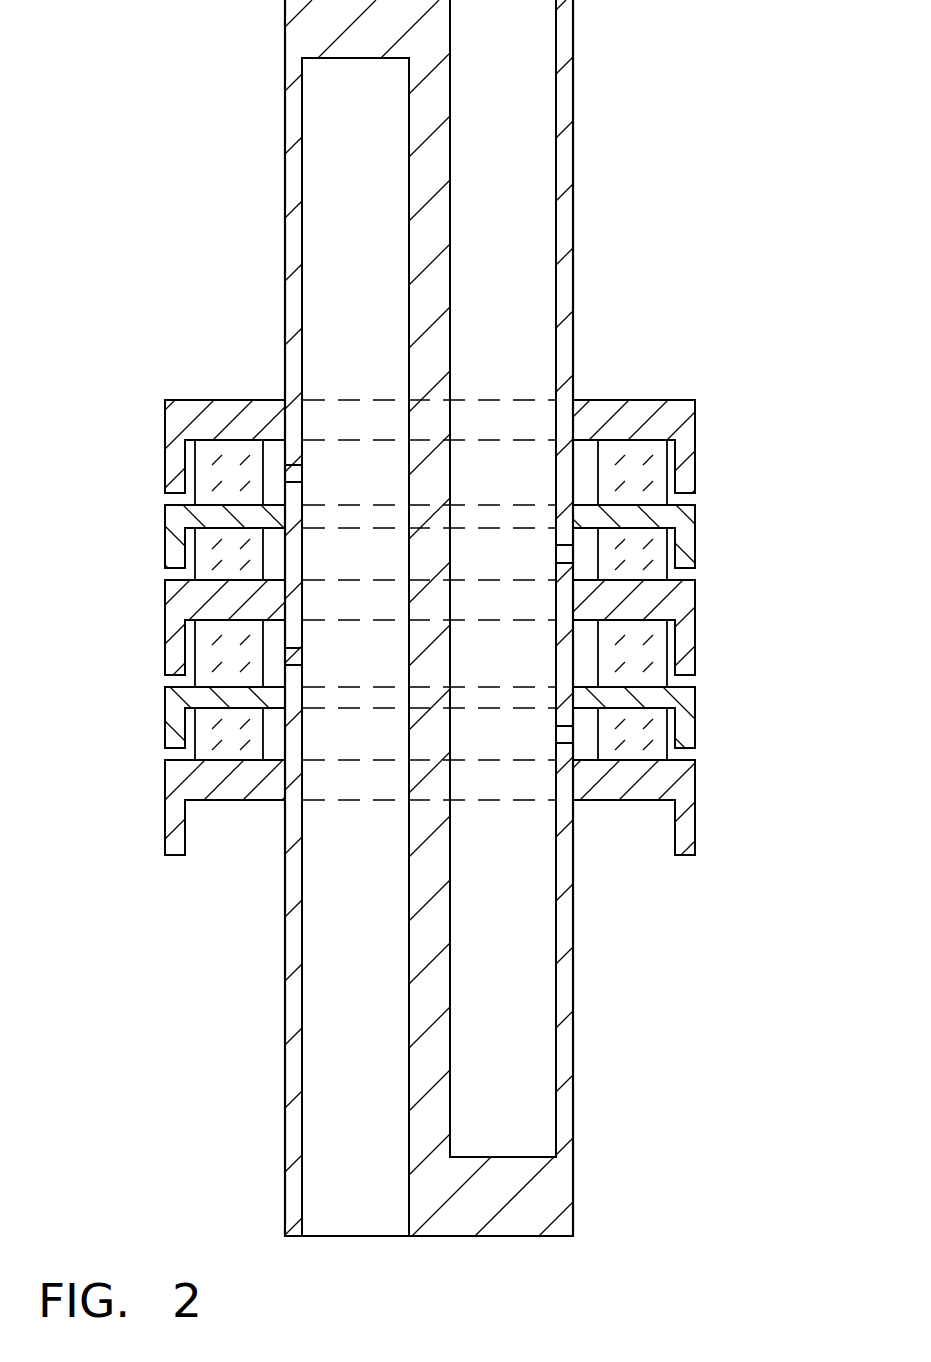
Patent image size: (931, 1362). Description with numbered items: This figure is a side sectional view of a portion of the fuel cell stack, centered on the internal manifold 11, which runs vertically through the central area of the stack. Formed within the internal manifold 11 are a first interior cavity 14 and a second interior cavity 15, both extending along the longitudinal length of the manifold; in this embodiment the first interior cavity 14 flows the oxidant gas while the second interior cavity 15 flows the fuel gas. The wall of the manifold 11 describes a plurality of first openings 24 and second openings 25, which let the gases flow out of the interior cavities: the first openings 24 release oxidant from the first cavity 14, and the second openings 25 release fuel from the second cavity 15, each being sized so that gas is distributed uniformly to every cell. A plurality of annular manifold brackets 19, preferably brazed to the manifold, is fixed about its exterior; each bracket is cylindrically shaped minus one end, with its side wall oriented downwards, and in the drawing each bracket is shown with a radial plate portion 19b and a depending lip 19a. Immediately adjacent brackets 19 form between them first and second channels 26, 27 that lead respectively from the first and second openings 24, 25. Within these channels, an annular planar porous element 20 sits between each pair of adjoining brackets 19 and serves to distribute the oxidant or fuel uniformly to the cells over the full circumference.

The internal manifold 11 is at (285, 106).
The first interior cavity 14 is at (367, 1095).
The second interior cavity 15 is at (512, 169).
The annular manifold bracket 19 is at (228, 396).
The end flange lip 19a is at (696, 448).
The end plate 19b is at (620, 399).
The porous element 20 is at (205, 463).
The first opening 24 is at (293, 481).
The second opening 25 is at (565, 562).
The first channel 26 is at (185, 568).
The second channel 27 is at (693, 576).